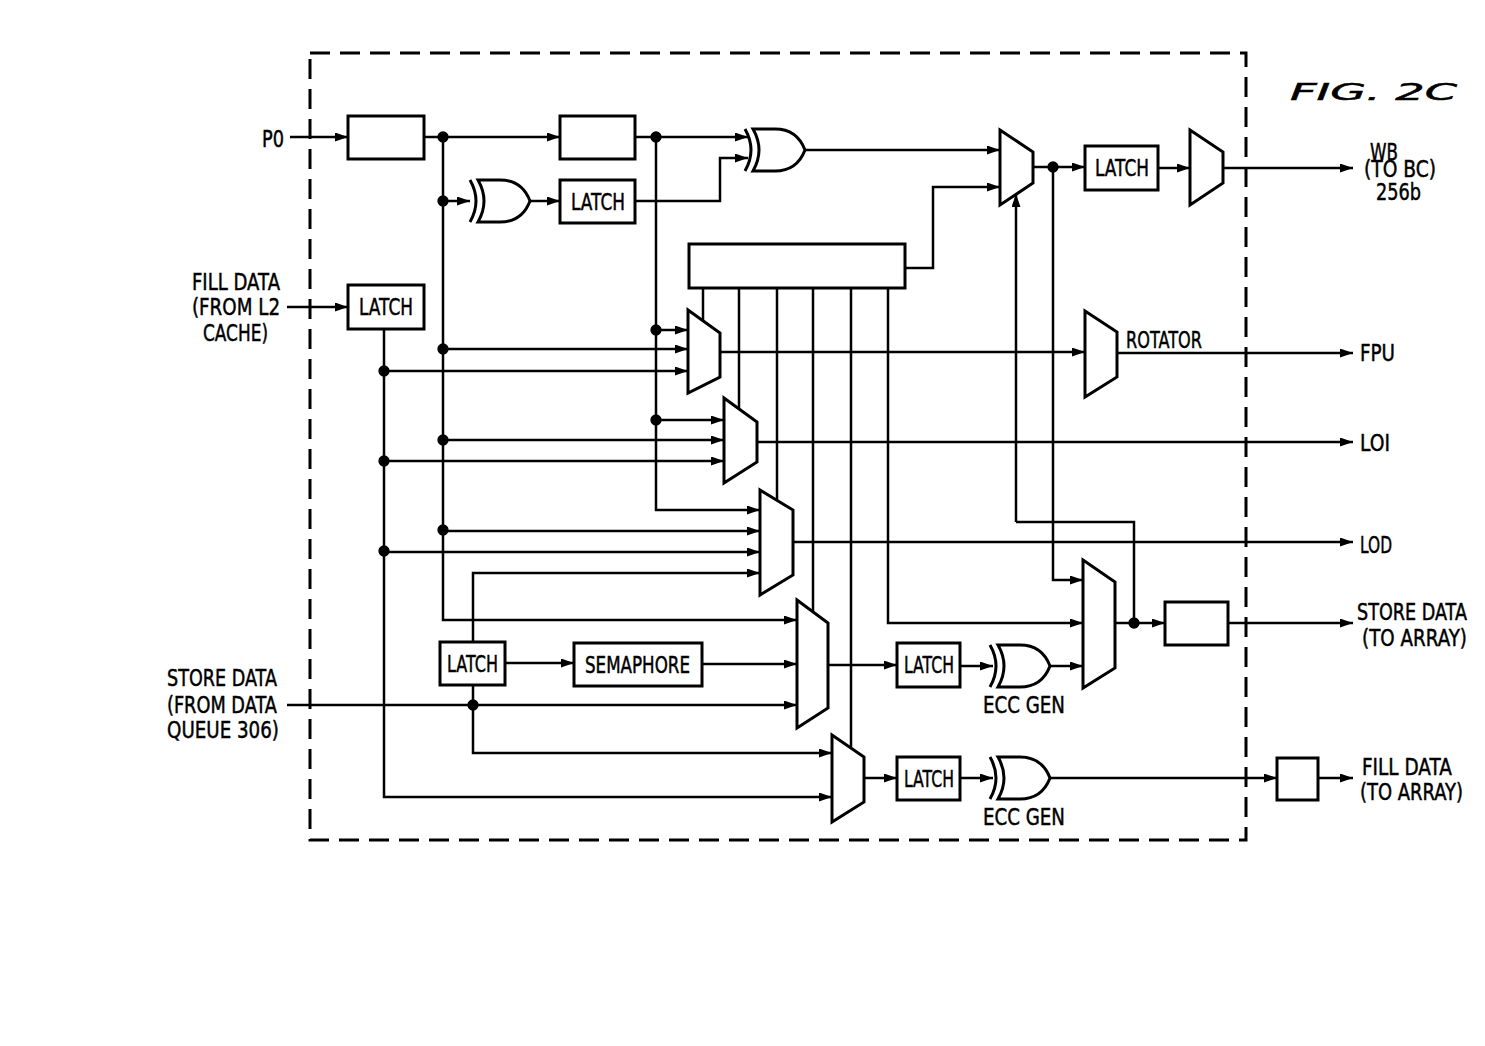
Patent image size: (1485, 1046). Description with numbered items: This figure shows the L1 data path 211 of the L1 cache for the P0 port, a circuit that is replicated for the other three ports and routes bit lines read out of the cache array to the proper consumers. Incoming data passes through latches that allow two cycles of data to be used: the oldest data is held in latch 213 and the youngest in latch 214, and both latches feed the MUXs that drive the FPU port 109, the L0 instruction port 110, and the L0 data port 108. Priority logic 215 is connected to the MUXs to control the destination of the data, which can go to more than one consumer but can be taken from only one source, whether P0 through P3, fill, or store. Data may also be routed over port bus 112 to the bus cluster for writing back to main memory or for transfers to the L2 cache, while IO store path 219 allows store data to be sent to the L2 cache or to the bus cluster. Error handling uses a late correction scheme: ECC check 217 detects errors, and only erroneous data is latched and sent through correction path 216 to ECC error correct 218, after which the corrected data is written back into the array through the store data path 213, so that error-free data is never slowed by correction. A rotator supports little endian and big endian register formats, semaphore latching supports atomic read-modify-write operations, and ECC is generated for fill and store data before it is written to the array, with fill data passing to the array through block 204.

The L1 data path 211 is at (751, 53).
The latch 213 is at (596, 116).
The latch 214 is at (387, 160).
The priority logic 215 is at (848, 244).
The correction path 216 is at (1054, 470).
The ECC check 217 is at (505, 224).
The ECC error correct 218 is at (780, 172).
The IO store path 219 is at (1016, 473).
The port bus 112 is at (1283, 171).
The floating point result buses 109 is at (1283, 356).
The return bus 110 is at (1283, 445).
The port buses 108 is at (1283, 545).
The array interface 204 is at (1298, 802).